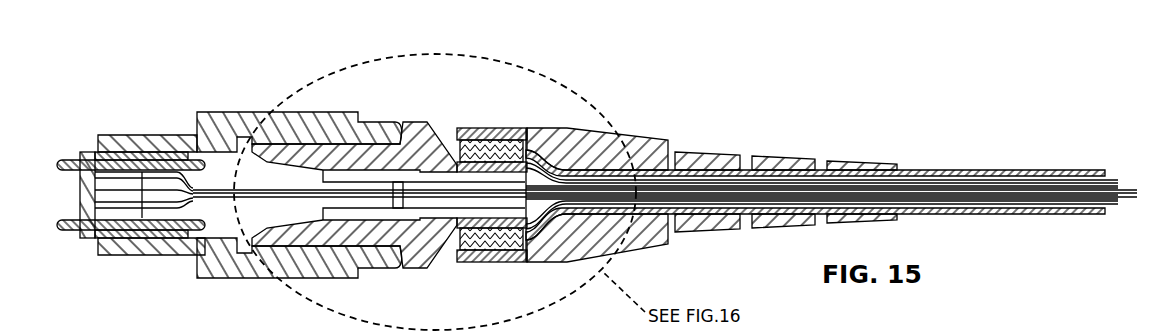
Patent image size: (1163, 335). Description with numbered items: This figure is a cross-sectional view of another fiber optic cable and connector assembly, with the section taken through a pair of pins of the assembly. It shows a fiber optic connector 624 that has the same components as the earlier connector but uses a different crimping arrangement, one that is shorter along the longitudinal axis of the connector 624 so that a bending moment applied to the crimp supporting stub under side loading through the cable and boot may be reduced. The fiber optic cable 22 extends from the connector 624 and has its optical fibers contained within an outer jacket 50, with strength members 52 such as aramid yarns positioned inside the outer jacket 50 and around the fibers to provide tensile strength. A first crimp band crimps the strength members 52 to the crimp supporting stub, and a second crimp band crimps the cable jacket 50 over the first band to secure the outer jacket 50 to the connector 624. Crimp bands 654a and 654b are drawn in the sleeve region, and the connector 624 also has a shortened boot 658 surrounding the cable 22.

The fiber optic cable 22 is at (956, 170).
The outer jacket 50 is at (608, 176).
The strength members 52 is at (544, 170).
The fiber optic connector 624 is at (366, 60).
The inner sleeve 654a is at (514, 157).
The outer sleeve 654b is at (481, 140).
The boot 658 is at (698, 152).